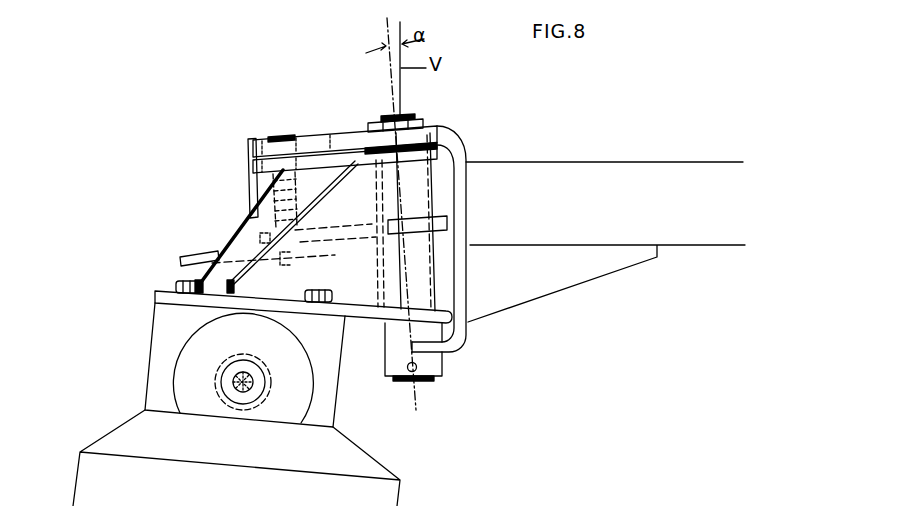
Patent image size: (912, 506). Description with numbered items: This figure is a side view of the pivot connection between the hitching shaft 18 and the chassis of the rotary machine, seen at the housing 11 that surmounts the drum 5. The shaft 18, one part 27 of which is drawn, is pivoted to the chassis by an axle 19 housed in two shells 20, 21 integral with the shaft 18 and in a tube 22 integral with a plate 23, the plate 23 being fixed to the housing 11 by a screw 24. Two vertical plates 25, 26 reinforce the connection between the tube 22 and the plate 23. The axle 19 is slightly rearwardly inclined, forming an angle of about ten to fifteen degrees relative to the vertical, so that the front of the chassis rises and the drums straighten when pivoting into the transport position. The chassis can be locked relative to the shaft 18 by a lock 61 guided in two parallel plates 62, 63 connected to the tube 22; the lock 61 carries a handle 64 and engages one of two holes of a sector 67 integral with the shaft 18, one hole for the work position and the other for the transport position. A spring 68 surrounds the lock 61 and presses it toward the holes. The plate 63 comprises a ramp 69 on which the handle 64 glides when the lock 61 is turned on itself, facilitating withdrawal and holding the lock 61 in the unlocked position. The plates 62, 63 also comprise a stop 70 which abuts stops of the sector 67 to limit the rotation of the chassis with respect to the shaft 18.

The drum 5 is at (82, 458).
The housing 11 is at (157, 357).
The shaft 18 is at (658, 155).
The axle 19 is at (414, 382).
The shell 20 is at (441, 372).
The shell 21 is at (430, 121).
The tube 22 is at (428, 182).
The plate 23 is at (176, 287).
The screw 24 is at (157, 299).
The vertical plate 25 is at (255, 247).
The vertical plate 26 is at (263, 280).
The part of shaft 27 is at (598, 172).
The lock 61 is at (282, 135).
The plate 62 is at (338, 160).
The plate 63 is at (340, 240).
The handle 64 is at (183, 257).
The sector 67 is at (310, 145).
The spring 68 is at (265, 193).
The ramp 69 is at (303, 260).
The stop 70 is at (251, 138).